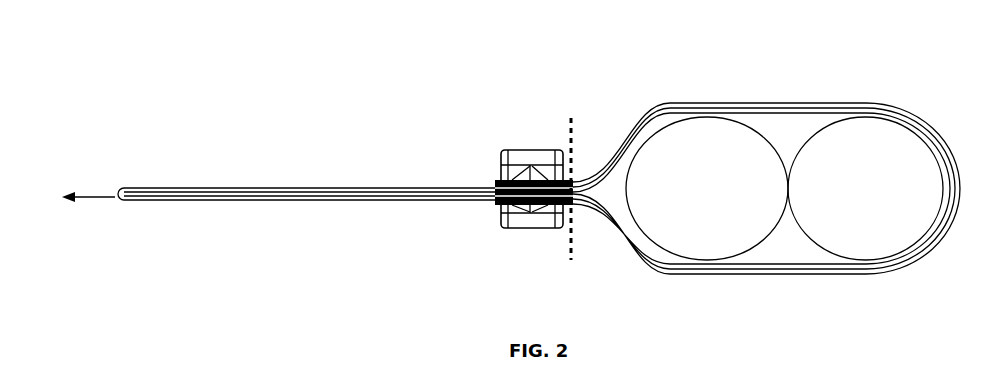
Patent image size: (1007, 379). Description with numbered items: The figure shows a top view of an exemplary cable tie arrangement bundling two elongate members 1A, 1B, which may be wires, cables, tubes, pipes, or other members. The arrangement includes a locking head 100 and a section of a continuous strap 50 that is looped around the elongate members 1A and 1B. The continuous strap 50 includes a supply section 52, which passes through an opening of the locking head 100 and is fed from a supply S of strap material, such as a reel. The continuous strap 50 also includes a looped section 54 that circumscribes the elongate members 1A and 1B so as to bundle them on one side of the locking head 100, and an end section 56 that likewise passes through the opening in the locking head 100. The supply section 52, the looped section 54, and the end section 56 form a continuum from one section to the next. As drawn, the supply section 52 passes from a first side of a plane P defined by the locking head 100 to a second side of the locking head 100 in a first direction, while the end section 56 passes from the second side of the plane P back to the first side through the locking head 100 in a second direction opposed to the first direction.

The continuous strap 50 is at (228, 159).
The supply section 52 is at (455, 199).
The looped section 54 is at (763, 104).
The end section 56 is at (493, 180).
The locking head 100 is at (527, 152).
The elongate member 1A is at (876, 198).
The elongate member 1B is at (718, 198).
The plane P is at (564, 209).
The supply S is at (78, 199).